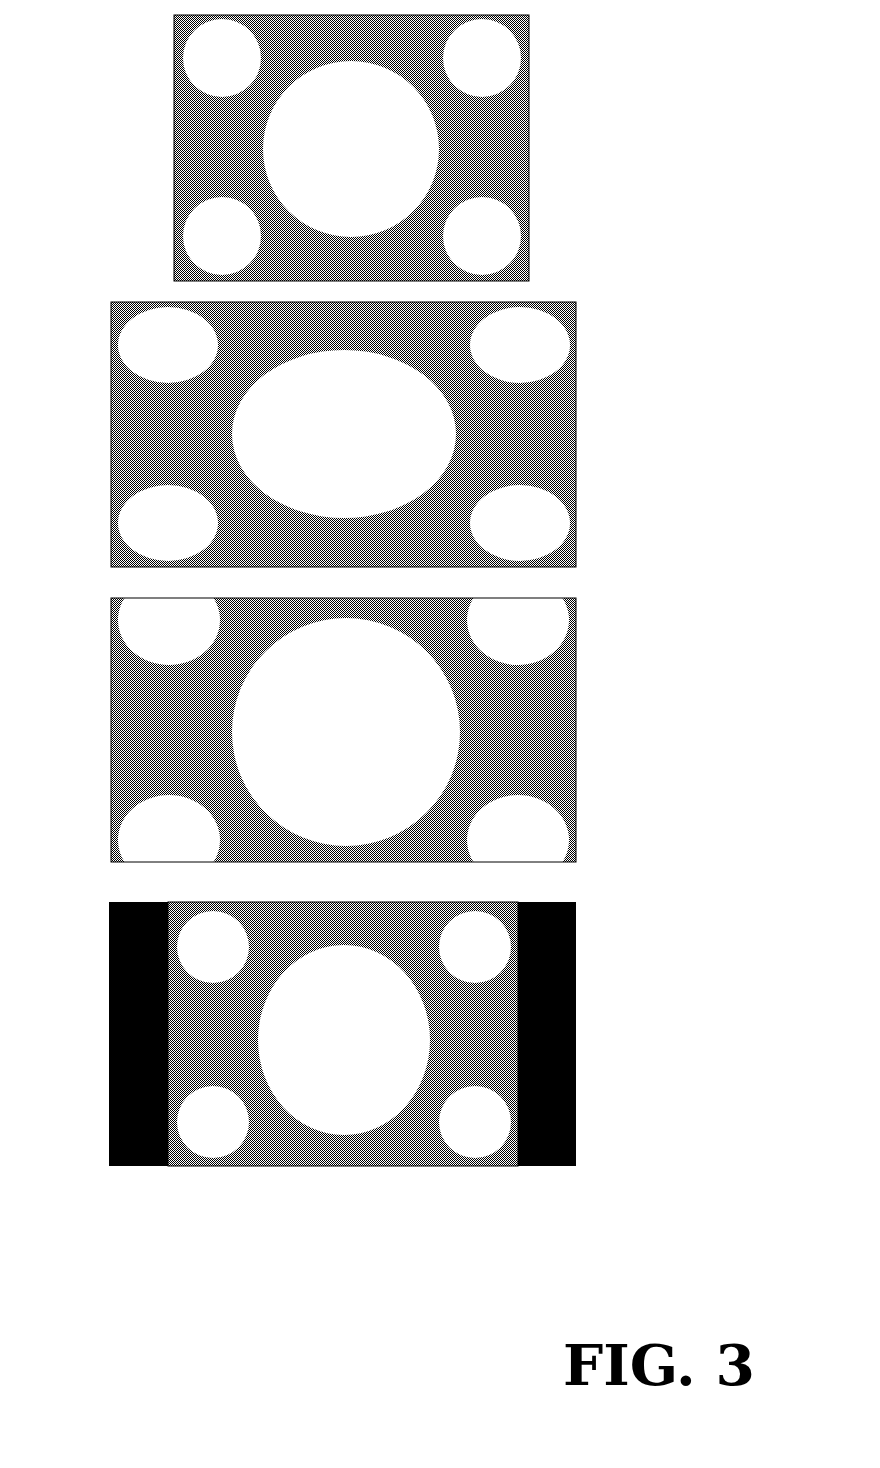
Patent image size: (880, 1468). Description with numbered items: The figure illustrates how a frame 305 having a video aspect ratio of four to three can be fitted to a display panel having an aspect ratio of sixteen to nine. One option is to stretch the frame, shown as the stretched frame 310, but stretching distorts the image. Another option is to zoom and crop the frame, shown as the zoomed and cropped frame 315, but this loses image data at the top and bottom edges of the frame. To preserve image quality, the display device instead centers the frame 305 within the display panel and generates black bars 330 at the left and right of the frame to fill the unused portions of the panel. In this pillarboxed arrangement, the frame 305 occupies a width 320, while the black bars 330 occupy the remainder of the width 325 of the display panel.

The frame 305 is at (530, 140).
The stretched frame 310 is at (577, 433).
The zoomed and cropped frame 315 is at (577, 727).
The width 320 is at (518, 1166).
The width of the display panel 325 is at (576, 1233).
The black bars 330 is at (577, 1025).